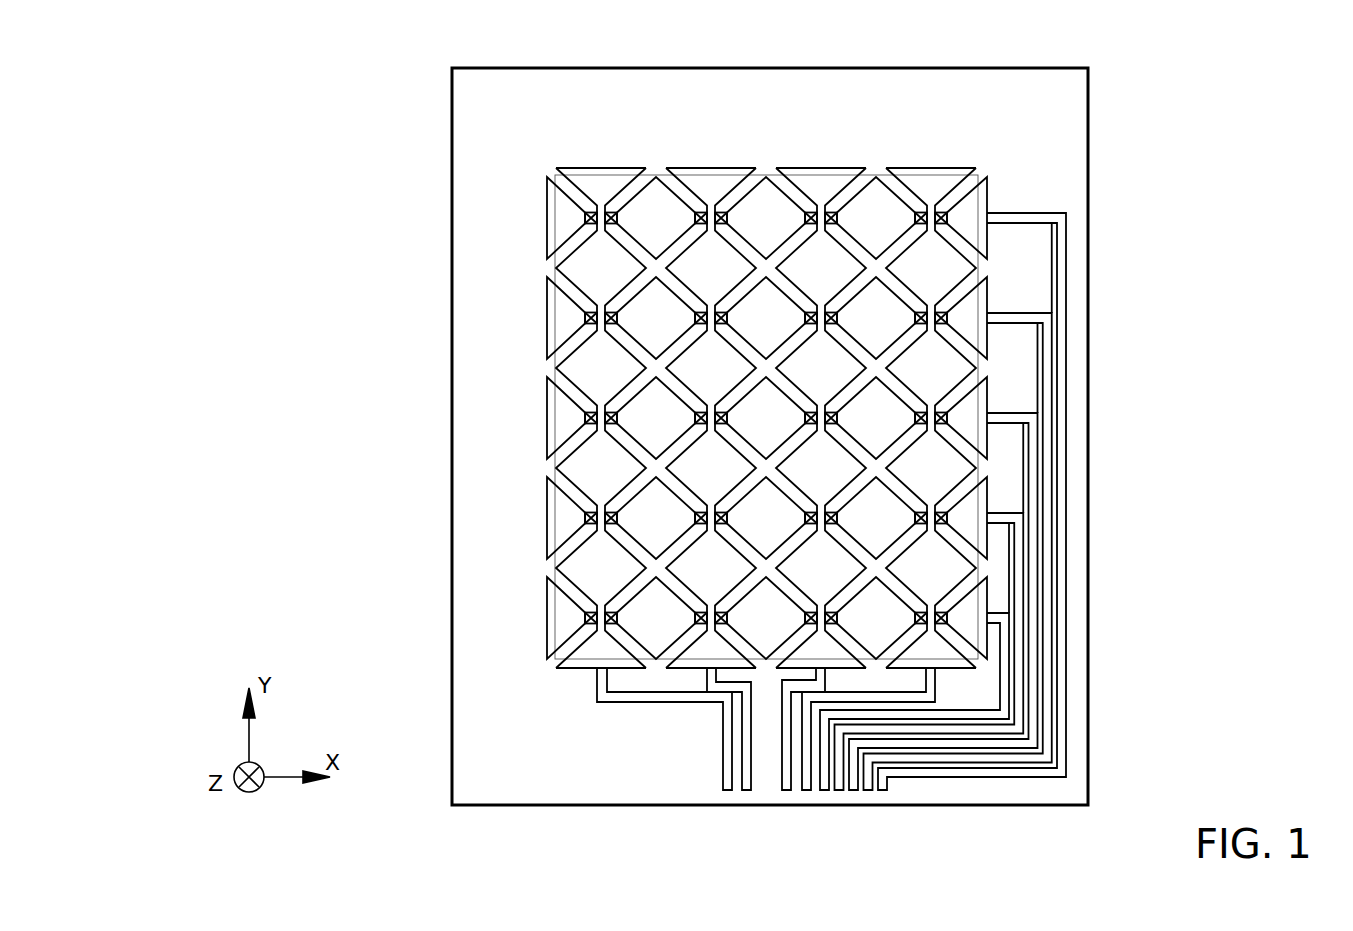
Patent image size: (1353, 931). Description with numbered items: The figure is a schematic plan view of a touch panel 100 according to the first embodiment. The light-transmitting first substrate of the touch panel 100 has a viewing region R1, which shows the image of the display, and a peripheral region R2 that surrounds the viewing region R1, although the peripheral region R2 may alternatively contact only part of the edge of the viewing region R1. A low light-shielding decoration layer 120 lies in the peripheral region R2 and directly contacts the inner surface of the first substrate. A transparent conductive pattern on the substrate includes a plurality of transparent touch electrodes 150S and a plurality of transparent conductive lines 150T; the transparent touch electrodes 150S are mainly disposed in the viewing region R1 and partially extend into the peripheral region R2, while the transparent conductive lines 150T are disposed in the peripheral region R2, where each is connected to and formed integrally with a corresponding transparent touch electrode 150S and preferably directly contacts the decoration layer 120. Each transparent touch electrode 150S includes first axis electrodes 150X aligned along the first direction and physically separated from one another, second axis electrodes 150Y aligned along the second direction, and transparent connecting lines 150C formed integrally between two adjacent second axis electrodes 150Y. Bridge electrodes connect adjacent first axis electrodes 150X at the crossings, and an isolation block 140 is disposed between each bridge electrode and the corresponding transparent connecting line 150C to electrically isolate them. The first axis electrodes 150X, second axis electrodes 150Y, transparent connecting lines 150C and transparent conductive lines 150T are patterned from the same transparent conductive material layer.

The touch panel 100 is at (1141, 72).
The low light-shielding decoration layer 120 is at (1078, 775).
The viewing region R1 is at (881, 172).
The peripheral region R2 is at (1092, 738).
The isolation block 140 is at (942, 412).
The transparent conductive line 150T is at (1014, 530).
The first axis electrode 150X is at (990, 598).
The second axis electrode 150Y is at (588, 566).
The transparent touch electrode 150S is at (775, 505).
The transparent connecting line 150C is at (593, 627).